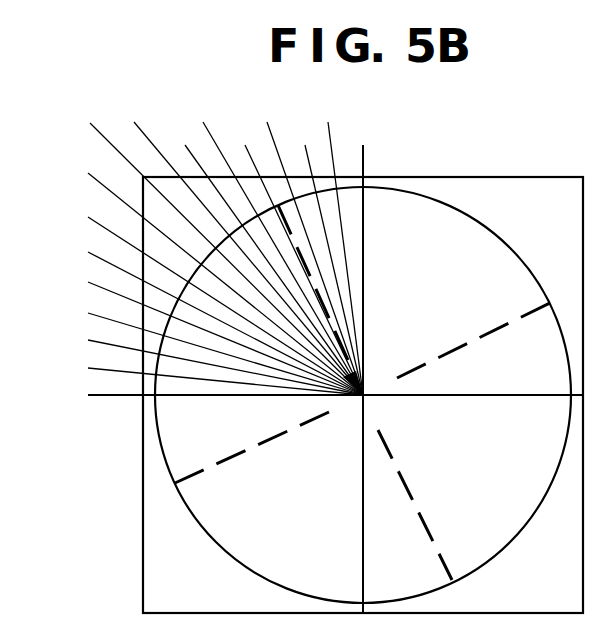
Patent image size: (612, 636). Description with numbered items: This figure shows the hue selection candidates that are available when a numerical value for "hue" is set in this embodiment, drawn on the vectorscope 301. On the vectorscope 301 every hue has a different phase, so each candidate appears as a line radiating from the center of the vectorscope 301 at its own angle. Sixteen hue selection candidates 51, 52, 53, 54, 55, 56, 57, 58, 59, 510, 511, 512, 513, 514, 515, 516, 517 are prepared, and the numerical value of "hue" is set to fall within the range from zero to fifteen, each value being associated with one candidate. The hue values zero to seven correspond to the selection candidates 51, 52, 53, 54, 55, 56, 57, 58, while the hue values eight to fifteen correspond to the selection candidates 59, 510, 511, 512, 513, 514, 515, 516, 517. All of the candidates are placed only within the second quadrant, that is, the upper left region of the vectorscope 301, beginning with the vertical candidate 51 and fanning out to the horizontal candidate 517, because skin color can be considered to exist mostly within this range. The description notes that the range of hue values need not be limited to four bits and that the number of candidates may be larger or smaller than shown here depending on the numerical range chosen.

The vectorscope 301 is at (482, 175).
The hue selection candidate 51 is at (363, 366).
The hue selection candidate 52 is at (338, 247).
The hue selection candidate 53 is at (327, 257).
The hue selection candidate 54 is at (308, 247).
The hue selection candidate 55 is at (297, 257).
The hue selection candidate 56 is at (275, 247).
The hue selection candidate 57 is at (266, 257).
The hue selection candidate 58 is at (241, 247).
The hue selection candidate 59 is at (218, 247).
The hue selection candidate 510 is at (201, 277).
The hue selection candidate 511 is at (201, 298).
The hue selection candidate 512 is at (201, 316).
The hue selection candidate 513 is at (201, 330).
The hue selection candidate 514 is at (201, 346).
The hue selection candidate 515 is at (201, 360).
The hue selection candidate 516 is at (201, 374).
The hue selection candidate 517 is at (311, 396).